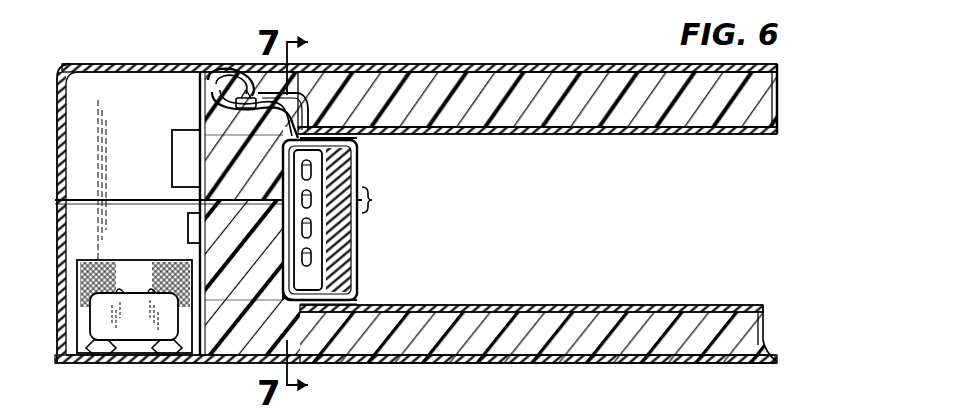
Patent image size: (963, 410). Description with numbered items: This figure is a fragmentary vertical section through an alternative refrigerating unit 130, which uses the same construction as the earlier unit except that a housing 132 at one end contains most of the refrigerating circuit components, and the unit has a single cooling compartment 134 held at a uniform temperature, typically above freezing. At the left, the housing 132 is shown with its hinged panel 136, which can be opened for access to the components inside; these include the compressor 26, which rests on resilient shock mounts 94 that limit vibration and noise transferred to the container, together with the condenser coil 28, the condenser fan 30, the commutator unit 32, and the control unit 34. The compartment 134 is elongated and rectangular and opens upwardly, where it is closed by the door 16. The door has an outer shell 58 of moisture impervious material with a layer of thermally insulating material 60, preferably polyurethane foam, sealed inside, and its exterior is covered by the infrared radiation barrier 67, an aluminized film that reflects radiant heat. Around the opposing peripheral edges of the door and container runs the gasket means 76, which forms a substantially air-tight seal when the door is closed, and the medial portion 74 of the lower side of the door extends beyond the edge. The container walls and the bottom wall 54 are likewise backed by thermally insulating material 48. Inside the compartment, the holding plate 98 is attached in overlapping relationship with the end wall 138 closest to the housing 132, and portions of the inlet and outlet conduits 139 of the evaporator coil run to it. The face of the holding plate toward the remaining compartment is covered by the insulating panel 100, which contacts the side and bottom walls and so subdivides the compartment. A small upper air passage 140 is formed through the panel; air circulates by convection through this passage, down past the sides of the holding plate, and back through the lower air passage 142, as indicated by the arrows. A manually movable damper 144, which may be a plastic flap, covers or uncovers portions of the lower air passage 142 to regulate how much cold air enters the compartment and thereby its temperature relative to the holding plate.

The door 16 is at (496, 66).
The compressor 26 is at (132, 325).
The condenser coil 28 is at (98, 263).
The condenser fan 30 is at (155, 246).
The commutator unit 32 is at (184, 130).
The control unit 34 is at (188, 222).
The thermally insulating material 48 is at (358, 241).
The bottom wall 54 is at (547, 304).
The outer shell 58 is at (460, 67).
The thermally insulating material 60 is at (606, 112).
The infrared radiation barrier 67 is at (631, 63).
The medial portion 74 is at (695, 128).
The gasket means 76 is at (234, 92).
The resilient shock mounts 94 is at (88, 351).
The holding plate 98 is at (310, 130).
The insulating panel 100 is at (357, 227).
The refrigerating unit 130 is at (583, 36).
The housing 132 is at (196, 28).
The cooling compartment 134 is at (628, 236).
The hinged panel 136 is at (70, 192).
The end wall 138 is at (266, 272).
The inlet and outlet conduits 139 is at (315, 181).
The upper air passage 140 is at (350, 133).
The lower air passage 142 is at (340, 303).
The damper 144 is at (385, 296).